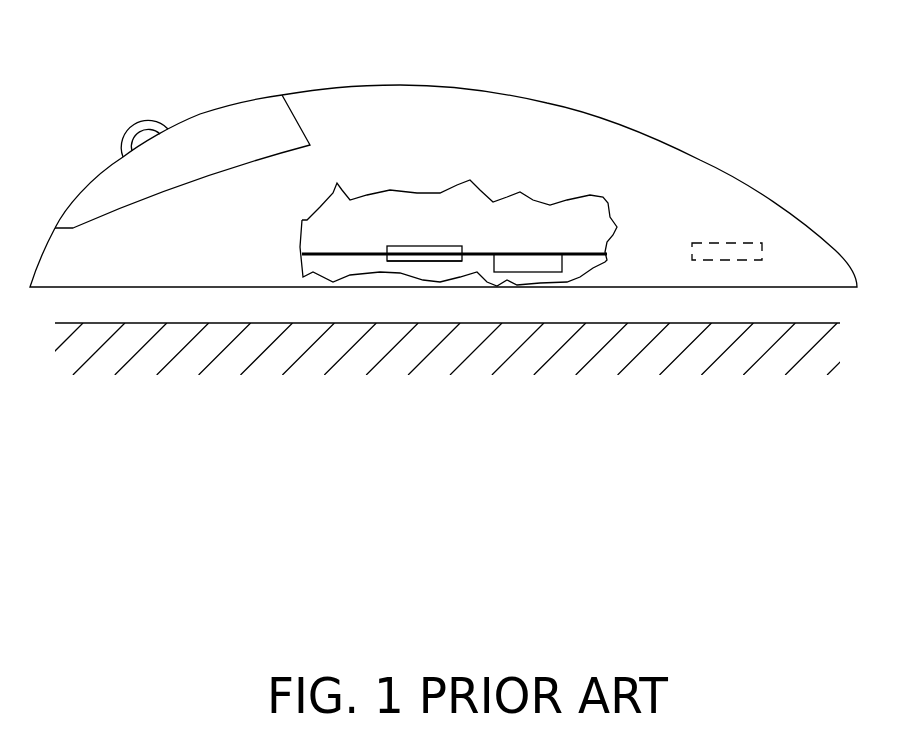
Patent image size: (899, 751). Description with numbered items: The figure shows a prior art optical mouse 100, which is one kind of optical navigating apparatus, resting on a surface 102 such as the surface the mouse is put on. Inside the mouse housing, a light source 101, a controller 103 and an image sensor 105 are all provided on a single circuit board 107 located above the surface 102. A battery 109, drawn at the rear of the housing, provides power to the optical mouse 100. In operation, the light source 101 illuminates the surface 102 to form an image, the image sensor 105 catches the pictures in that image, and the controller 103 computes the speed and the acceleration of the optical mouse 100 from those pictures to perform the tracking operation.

The optical mouse 100 is at (618, 122).
The light source 101 is at (562, 267).
The surface 102 is at (217, 345).
The controller 103 is at (428, 246).
The image sensor 105 is at (426, 262).
The circuit board 107 is at (353, 253).
The battery 109 is at (735, 243).